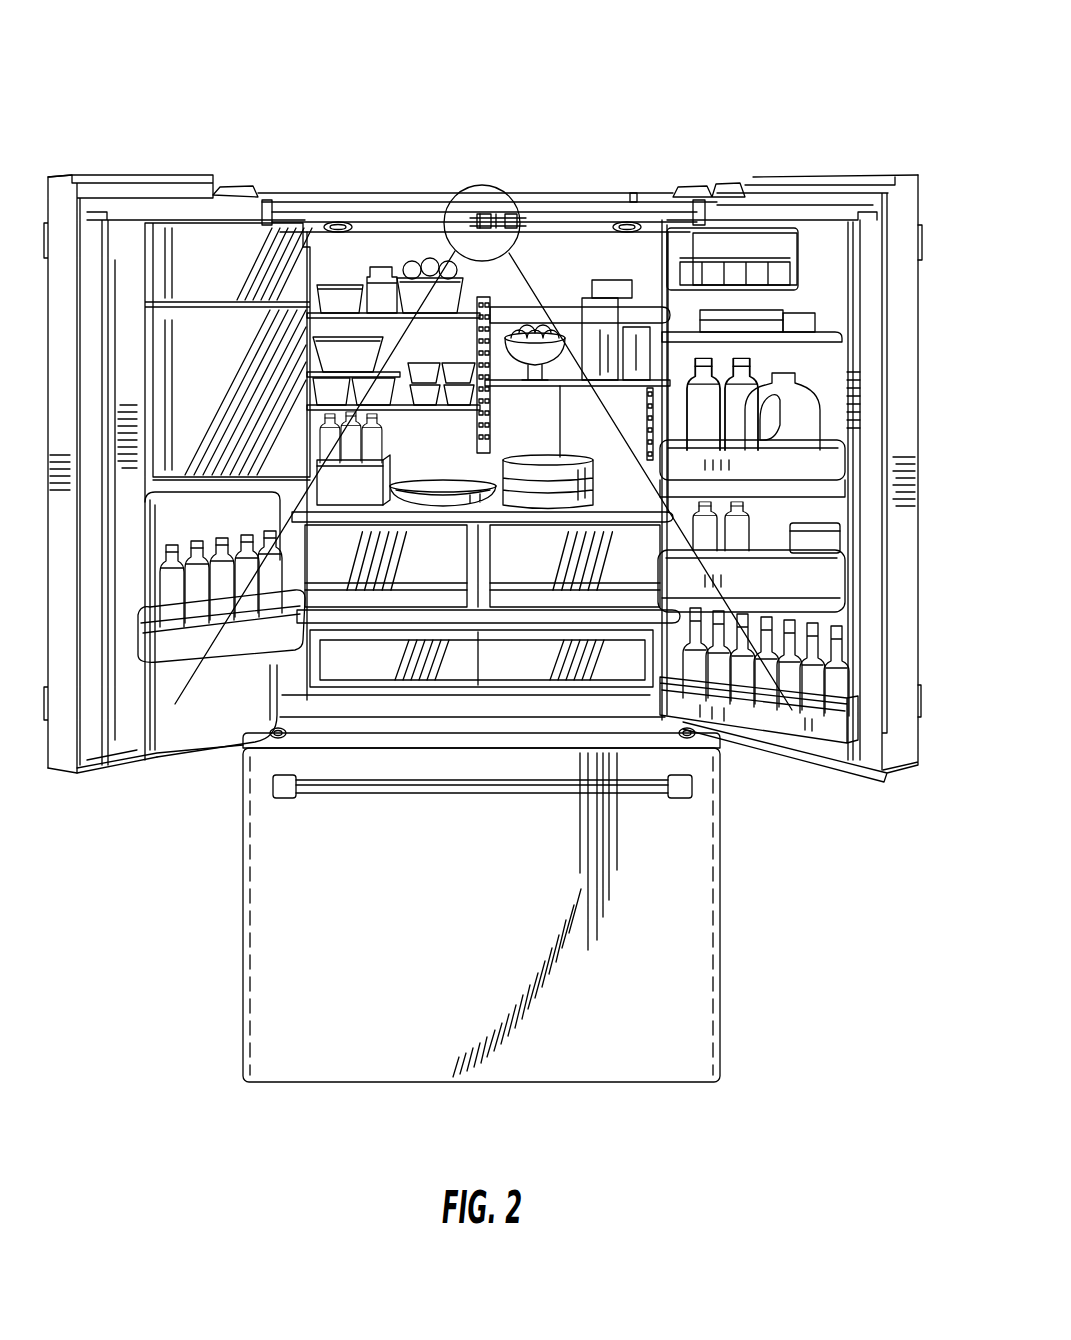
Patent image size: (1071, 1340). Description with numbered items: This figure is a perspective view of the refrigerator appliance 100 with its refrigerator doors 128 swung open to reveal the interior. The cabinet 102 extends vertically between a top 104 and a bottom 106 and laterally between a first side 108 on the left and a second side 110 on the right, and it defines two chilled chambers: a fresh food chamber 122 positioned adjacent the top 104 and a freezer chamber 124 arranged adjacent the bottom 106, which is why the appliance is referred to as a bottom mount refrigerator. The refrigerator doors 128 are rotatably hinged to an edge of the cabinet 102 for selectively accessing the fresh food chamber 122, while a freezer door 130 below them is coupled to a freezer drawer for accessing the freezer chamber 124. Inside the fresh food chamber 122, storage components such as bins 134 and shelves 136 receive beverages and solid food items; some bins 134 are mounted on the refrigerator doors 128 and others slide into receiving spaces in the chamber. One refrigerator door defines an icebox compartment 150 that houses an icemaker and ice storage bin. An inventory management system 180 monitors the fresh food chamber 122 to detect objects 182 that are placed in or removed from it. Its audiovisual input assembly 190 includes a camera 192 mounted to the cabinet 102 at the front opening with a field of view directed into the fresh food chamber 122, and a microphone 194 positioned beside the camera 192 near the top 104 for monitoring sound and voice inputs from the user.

The refrigerator appliance 100 is at (861, 102).
The cabinet 102 is at (650, 195).
The top 104 is at (424, 184).
The bottom 106 is at (345, 1092).
The first side 108 is at (243, 1092).
The second side 110 is at (717, 1092).
The fresh food chamber 122 is at (592, 262).
The freezer chamber 124 is at (342, 896).
The refrigerator doors 128 is at (903, 570).
The freezer door 130 is at (508, 943).
The bins 134 is at (548, 568).
The shelves 136 is at (337, 305).
The icebox compartment 150 is at (208, 282).
The inventory management system 180 is at (472, 160).
The objects 182 is at (382, 290).
The audiovisual input assembly 190 is at (494, 175).
The camera 192 is at (492, 223).
The microphone 194 is at (467, 226).